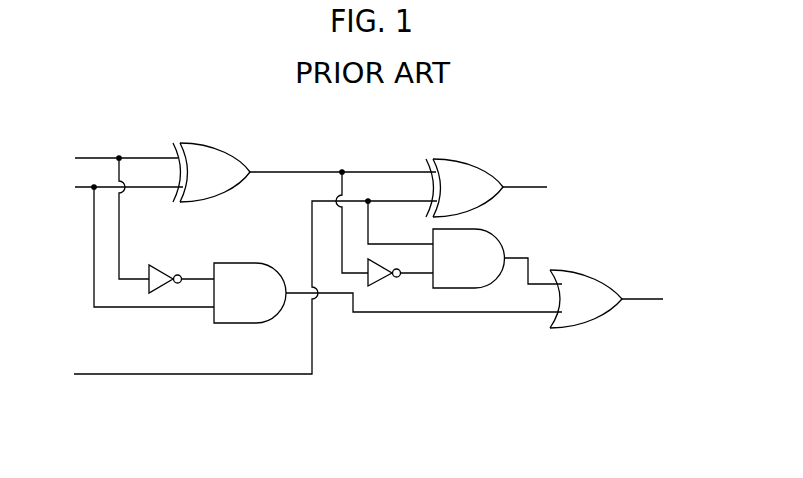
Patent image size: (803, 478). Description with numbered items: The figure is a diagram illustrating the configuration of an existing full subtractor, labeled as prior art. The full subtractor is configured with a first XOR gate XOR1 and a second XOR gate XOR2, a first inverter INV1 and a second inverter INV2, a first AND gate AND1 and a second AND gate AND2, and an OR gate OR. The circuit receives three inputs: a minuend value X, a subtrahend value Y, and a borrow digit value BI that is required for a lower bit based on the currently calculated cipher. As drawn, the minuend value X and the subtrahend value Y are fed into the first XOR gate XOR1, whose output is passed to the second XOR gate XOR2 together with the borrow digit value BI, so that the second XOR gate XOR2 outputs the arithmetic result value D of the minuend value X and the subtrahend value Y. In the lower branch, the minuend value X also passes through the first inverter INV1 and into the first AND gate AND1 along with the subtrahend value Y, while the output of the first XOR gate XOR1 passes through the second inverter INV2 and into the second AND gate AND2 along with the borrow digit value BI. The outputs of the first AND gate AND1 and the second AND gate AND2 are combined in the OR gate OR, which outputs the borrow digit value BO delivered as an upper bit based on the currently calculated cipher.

The first XOR gate XOR1 is at (210, 143).
The second XOR gate XOR2 is at (462, 158).
The first inverter INV1 is at (157, 265).
The second inverter INV2 is at (380, 283).
The first AND gate AND1 is at (242, 263).
The second AND gate AND2 is at (497, 238).
The OR gate OR is at (578, 270).
The minuend value X is at (118, 214).
The subtrahend value Y is at (135, 242).
The borrow digit value BI is at (246, 291).
The arithmetic result value D is at (534, 187).
The borrow digit value BO is at (656, 299).